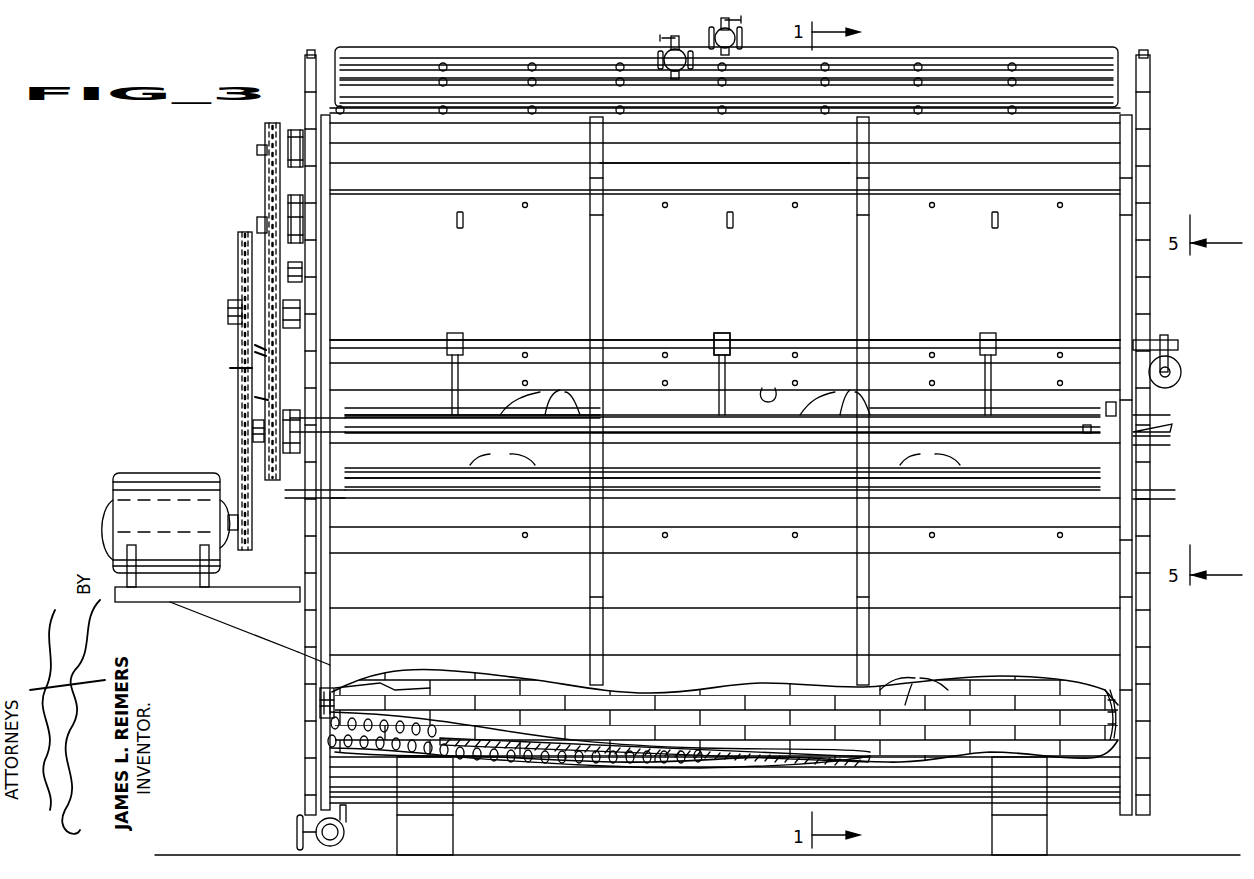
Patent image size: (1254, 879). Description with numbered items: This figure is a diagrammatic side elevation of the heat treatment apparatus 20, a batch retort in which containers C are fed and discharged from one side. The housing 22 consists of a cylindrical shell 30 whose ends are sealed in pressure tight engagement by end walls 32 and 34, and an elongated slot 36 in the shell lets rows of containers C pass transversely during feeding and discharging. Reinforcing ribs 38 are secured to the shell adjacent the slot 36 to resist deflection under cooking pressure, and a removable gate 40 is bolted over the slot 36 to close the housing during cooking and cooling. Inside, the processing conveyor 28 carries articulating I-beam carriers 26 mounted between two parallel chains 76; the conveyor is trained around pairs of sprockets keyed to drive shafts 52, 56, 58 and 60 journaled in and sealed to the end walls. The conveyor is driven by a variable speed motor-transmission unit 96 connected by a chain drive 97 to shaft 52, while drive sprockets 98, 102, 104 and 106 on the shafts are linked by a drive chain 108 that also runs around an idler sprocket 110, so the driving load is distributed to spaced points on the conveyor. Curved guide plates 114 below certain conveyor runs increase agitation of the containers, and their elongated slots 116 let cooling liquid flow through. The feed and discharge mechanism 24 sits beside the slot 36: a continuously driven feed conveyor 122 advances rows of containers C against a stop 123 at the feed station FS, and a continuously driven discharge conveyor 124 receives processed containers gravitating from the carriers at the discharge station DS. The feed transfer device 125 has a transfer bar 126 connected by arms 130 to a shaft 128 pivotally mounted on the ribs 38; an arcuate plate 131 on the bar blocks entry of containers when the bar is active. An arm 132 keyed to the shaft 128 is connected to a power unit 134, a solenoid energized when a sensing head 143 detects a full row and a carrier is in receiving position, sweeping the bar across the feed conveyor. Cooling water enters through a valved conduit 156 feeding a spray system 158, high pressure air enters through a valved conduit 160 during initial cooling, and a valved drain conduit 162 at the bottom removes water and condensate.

The heat treatment apparatus 20 is at (230, 160).
The cylindrical housing 22 is at (725, 154).
The feed and discharge mechanism 24 is at (556, 332).
The carriers 26 is at (742, 722).
The processing conveyor 28 is at (318, 690).
The cylindrical shell 30 is at (1118, 147).
The end wall 32 is at (302, 68).
The end wall 34 is at (1143, 67).
The elongated slot 36 is at (763, 385).
The reinforcing ribs 38 is at (330, 238).
The removable gate 40 is at (725, 259).
The drive shaft 52 is at (226, 298).
The drive shaft 56 is at (258, 222).
The drive shaft 58 is at (300, 300).
The drive shaft 60 is at (252, 428).
The chains 76 is at (318, 705).
The variable speed motor-transmission unit 96 is at (147, 483).
The chain drive 97 is at (237, 368).
The drive sprocket 98 is at (237, 274).
The drive sprocket 102 is at (264, 182).
The drive sprocket 104 is at (303, 272).
The drive sprocket 106 is at (262, 399).
The drive chain 108 is at (262, 349).
The idler sprocket 110 is at (264, 133).
The curved guide plates 114 is at (382, 718).
The elongated slots 116 is at (330, 748).
The feed conveyor 122 is at (720, 435).
The stop 123 is at (338, 410).
The discharge conveyor 124 is at (465, 492).
The feed transfer device 125 is at (895, 335).
The transfer bar 126 is at (886, 410).
The shaft 128 is at (748, 340).
The arms 130 is at (463, 377).
The arcuate plate 131 is at (1091, 434).
The arm 132 is at (1168, 352).
The power unit 134 is at (1182, 366).
The sensing head 143 is at (1110, 402).
The valved conduit 156 is at (739, 35).
The spray system 158 is at (485, 60).
The valved conduit 160 is at (665, 42).
The valved drain conduit 162 is at (366, 847).
The containers C is at (715, 537).
The feed station FS is at (415, 395).
The discharge station DS is at (720, 492).